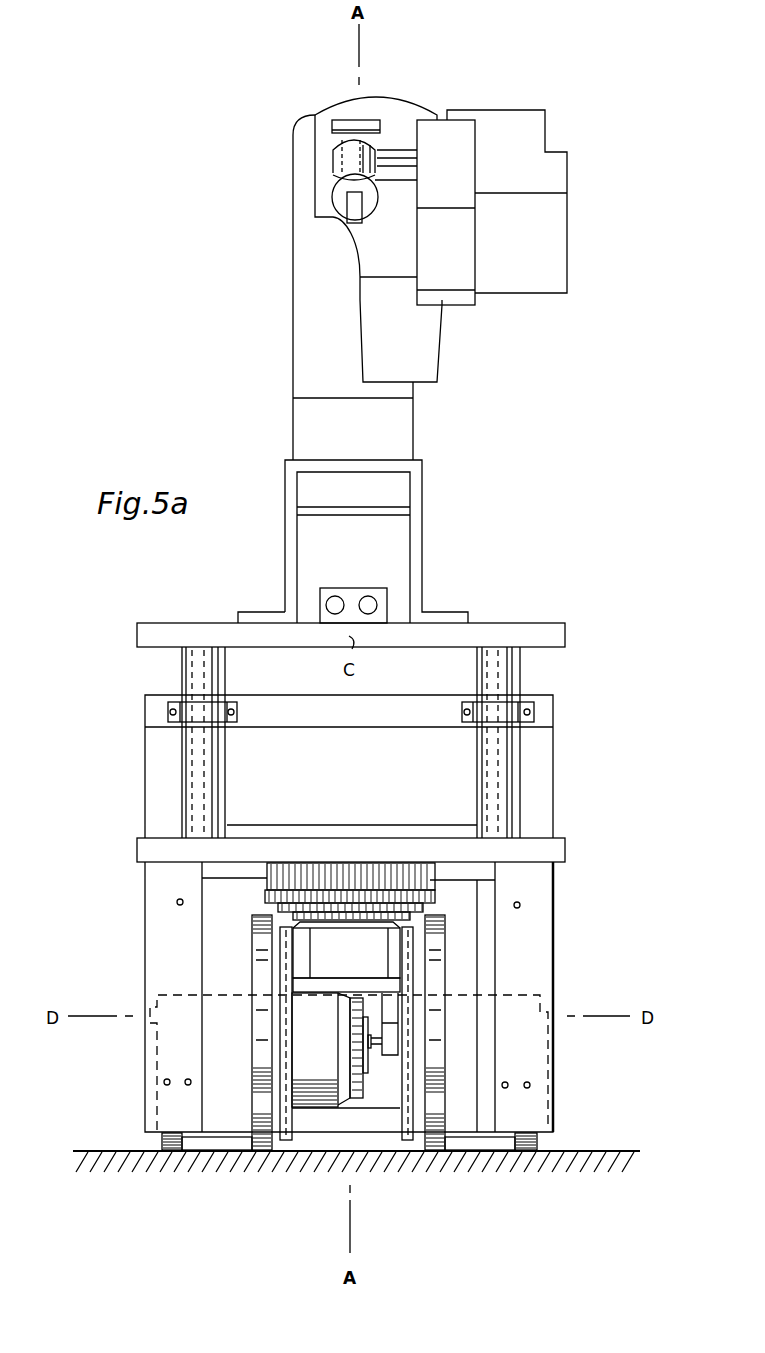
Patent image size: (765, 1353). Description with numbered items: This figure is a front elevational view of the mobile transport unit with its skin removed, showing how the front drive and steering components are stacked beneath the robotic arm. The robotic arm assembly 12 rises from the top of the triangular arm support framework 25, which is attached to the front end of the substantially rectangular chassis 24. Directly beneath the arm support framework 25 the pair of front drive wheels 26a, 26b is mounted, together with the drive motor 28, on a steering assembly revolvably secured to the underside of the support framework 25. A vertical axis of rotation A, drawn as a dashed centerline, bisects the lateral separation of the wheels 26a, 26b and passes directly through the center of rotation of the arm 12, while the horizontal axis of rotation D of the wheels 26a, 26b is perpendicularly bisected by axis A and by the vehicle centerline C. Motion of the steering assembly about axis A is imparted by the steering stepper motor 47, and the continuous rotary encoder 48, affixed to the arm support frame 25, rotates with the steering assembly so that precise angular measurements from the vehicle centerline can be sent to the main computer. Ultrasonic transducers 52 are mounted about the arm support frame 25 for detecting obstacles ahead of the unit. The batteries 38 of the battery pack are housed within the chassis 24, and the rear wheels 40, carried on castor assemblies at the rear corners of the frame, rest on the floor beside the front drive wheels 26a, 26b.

The robotic arm assembly 12 is at (423, 557).
The ultrasonic transducers 52 is at (368, 596).
The arm support framework 25 is at (565, 635).
The chassis 24 is at (182, 668).
The steering stepper motor 47 is at (392, 862).
The continuous rotary encoder 48 is at (268, 896).
The batteries 38 is at (192, 994).
The drive motor 28 is at (330, 1045).
The rear wheel 40 is at (161, 1143).
The front drive wheel 26a is at (435, 1153).
The front drive wheel 26b is at (258, 1153).